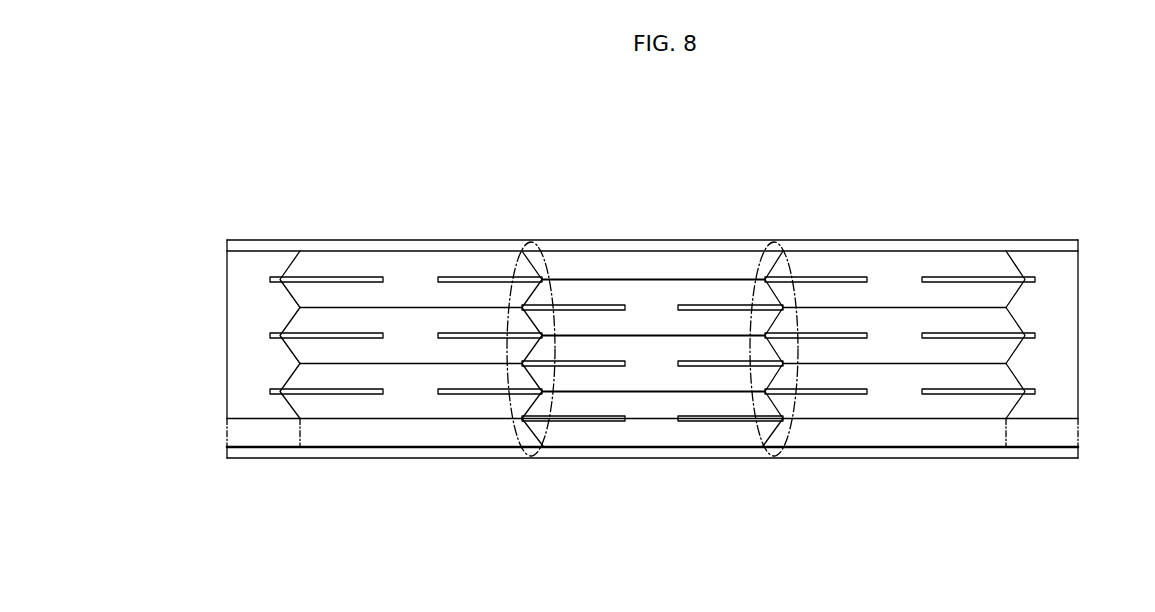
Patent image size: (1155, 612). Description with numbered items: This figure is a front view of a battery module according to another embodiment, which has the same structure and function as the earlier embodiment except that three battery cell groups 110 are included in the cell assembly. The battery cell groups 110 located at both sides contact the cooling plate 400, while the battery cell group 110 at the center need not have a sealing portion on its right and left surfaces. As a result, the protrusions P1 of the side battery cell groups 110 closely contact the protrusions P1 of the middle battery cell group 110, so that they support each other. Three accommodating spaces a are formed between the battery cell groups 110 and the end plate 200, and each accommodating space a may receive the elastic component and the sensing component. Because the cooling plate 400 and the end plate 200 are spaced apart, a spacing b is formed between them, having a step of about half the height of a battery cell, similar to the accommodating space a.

The battery cell group 110 is at (636, 268).
The end plate 200 is at (448, 240).
The cooling plate 400 is at (227, 328).
The protrusion P1 is at (546, 432).
The accommodating space a is at (695, 265).
The spacing b is at (272, 433).